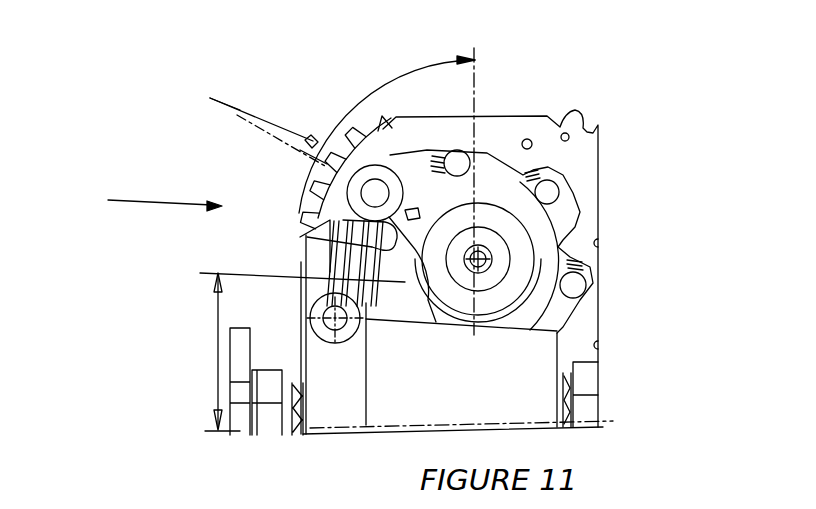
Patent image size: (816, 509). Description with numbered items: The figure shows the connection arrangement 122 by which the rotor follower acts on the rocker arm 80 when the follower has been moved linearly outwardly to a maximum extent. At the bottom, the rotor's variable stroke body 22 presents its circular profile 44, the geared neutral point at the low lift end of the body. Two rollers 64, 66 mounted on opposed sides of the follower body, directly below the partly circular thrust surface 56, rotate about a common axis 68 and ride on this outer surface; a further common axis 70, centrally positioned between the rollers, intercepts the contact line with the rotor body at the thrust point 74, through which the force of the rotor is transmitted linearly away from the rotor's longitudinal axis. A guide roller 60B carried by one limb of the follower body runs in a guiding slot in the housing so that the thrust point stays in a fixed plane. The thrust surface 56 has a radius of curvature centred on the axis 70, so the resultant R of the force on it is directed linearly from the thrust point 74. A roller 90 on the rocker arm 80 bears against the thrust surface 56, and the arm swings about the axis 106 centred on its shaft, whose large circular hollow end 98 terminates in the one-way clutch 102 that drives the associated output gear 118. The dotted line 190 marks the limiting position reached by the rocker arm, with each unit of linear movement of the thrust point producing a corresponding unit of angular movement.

The variable stroke body 22 is at (535, 377).
The circular profile 44 is at (557, 333).
The partly circular thrust surface 56 is at (345, 203).
The guide roller 60B is at (310, 322).
The roller 64 is at (305, 243).
The roller 66 is at (343, 343).
The common axis 68 is at (272, 272).
The common axis 70 is at (282, 360).
The thrust point 74 is at (352, 282).
The rocker arm 80 is at (428, 190).
The roller 90 is at (373, 172).
The large circular hollow end 98 is at (537, 225).
The one-way clutch 102 is at (512, 131).
The axis 106 is at (482, 261).
The output gear 118 is at (310, 140).
The connection arrangement 122 is at (137, 200).
The dotted line 190 is at (210, 98).
The resultant R is at (345, 281).